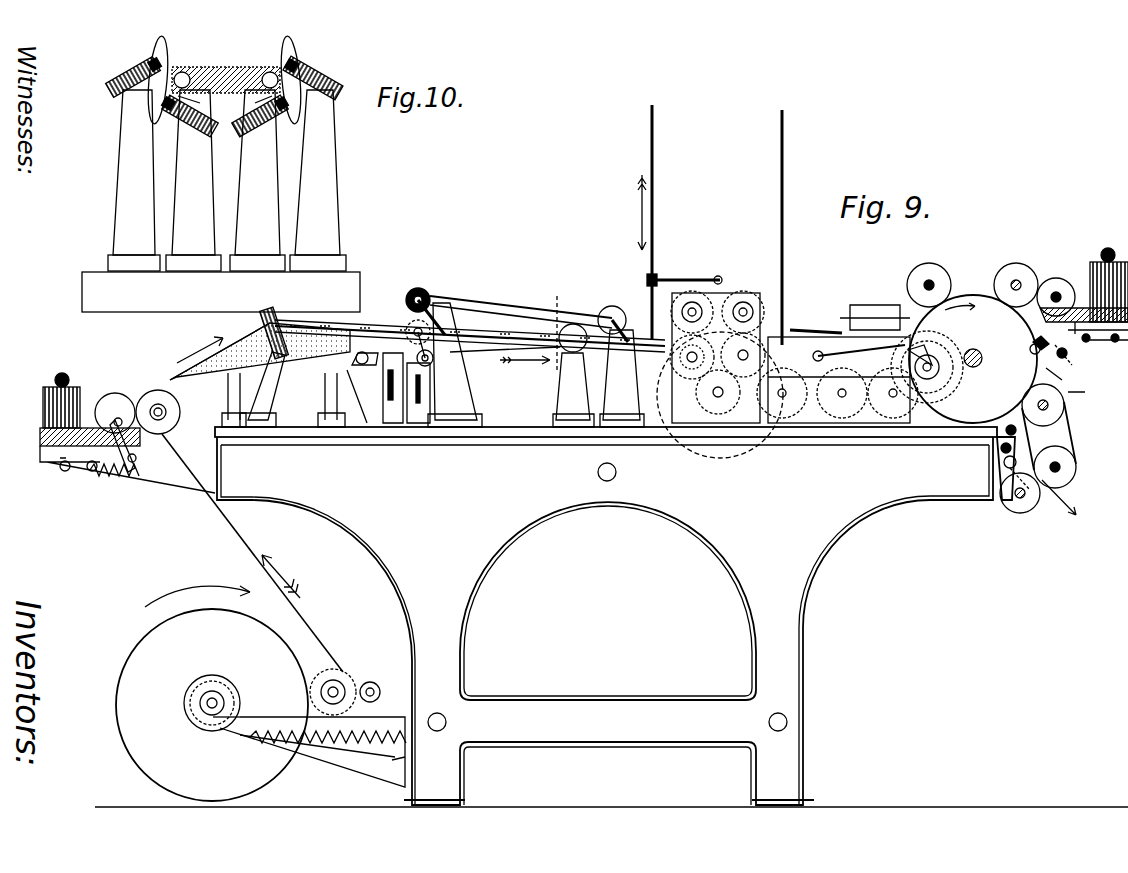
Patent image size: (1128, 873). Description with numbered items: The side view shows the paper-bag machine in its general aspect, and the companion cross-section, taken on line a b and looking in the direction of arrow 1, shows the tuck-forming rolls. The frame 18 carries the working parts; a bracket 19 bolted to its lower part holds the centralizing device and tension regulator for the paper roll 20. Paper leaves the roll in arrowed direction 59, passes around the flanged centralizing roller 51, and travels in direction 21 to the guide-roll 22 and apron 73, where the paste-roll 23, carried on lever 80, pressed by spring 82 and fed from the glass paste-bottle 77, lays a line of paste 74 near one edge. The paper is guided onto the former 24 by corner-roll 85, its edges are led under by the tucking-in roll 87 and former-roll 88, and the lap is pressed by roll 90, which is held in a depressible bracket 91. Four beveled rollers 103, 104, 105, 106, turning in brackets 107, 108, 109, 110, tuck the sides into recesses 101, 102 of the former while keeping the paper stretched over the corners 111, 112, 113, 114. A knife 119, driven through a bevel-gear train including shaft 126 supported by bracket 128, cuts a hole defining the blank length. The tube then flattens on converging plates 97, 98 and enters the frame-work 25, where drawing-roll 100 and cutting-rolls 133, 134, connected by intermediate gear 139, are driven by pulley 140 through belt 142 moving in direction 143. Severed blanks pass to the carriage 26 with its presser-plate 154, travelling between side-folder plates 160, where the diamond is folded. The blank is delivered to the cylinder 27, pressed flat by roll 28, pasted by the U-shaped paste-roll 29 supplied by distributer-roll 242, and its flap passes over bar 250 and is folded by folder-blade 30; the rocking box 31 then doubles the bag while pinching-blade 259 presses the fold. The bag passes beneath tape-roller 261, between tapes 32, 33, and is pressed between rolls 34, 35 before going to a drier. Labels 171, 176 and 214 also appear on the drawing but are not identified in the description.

In FIG. 9, the frame 18 is at (606, 616).
In FIG. 9, the bracket 19 is at (309, 752).
In FIG. 9, the paper roll 20 is at (212, 705).
In FIG. 9, the direction of paper travel 21 is at (252, 553).
In FIG. 9, the guide-roll 22 is at (158, 412).
In FIG. 9, the paste-roll 23 is at (115, 413).
In FIG. 10, the former 24 is at (226, 71).
In FIG. 9, the former 24 is at (470, 373).
In FIG. 9, the frame-work 25 is at (716, 358).
In FIG. 9, the carriage 26 is at (837, 380).
In FIG. 9, the cylinder 27 is at (973, 359).
In FIG. 9, the roll 28 is at (929, 285).
In FIG. 9, the paste-roll 29 is at (1016, 285).
In FIG. 9, the folder-blade 30 is at (1088, 340).
In FIG. 9, the rocking box 31 is at (1077, 384).
In FIG. 9, the tape 32 is at (1049, 436).
In FIG. 9, the tape 33 is at (1013, 462).
In FIG. 9, the pressing roll 34 is at (1055, 467).
In FIG. 9, the pressing roll 35 is at (1038, 494).
In FIG. 9, the centralizing roller 51 is at (345, 692).
In FIG. 9, the arrowed direction 59 is at (197, 590).
In FIG. 9, the apron 73 is at (207, 353).
In FIG. 9, the line of paste 74 is at (260, 375).
In FIG. 9, the paste-bottle 77 is at (71, 400).
In FIG. 9, the lever 80 is at (100, 446).
In FIG. 9, the spring 82 is at (127, 469).
In FIG. 9, the corner-roll 85 is at (270, 363).
In FIG. 9, the tucking-in roll 87 is at (359, 387).
In FIG. 9, the former-roll 88 is at (412, 334).
In FIG. 9, the roll 90 is at (435, 349).
In FIG. 9, the bracket 91 is at (406, 388).
In FIG. 9, the converging plate 97 is at (490, 346).
In FIG. 9, the converging plate 98 is at (521, 305).
In FIG. 9, the drawing-roll 100 is at (692, 312).
In FIG. 10, the recess of the former 101 is at (267, 69).
In FIG. 9, the recess of the former 101 is at (470, 334).
In FIG. 10, the recess of the former 102 is at (184, 72).
In FIG. 10, the beveled roller 103 is at (265, 116).
In FIG. 9, the beveled roller 103 is at (574, 338).
In FIG. 10, the beveled roller 104 is at (184, 116).
In FIG. 10, the beveled roller 105 is at (313, 68).
In FIG. 9, the beveled roller 105 is at (613, 324).
In FIG. 10, the beveled roller 106 is at (148, 56).
In FIG. 10, the bracket 107 is at (257, 180).
In FIG. 9, the bracket 107 is at (573, 390).
In FIG. 10, the bracket 108 is at (193, 180).
In FIG. 10, the bracket 109 is at (318, 180).
In FIG. 9, the bracket 109 is at (621, 378).
In FIG. 10, the bracket 110 is at (134, 180).
In FIG. 10, the corner of the former 111 is at (254, 104).
In FIG. 10, the corner of the former 112 is at (293, 60).
In FIG. 10, the corner of the former 113 is at (200, 104).
In FIG. 10, the corner of the former 114 is at (173, 67).
In FIG. 9, the notch-knife 119 is at (434, 304).
In FIG. 9, the shaft 126 is at (521, 315).
In FIG. 9, the bracket 128 is at (455, 365).
In FIG. 9, the cutting-roll 133 is at (717, 356).
In FIG. 9, the cutting-roll 134 is at (743, 312).
In FIG. 9, the intermediate gear 139 is at (718, 392).
In FIG. 9, the driving-pulley 140 is at (720, 402).
In FIG. 9, the belt 142 is at (714, 225).
In FIG. 9, the direction of belt motion 143 is at (626, 212).
In FIG. 9, the presser-plate 154 is at (816, 322).
In FIG. 9, the side-folder plate 160 is at (875, 316).
In FIG. 9, the link 171 is at (859, 352).
In FIG. 9, the pulley 176 is at (927, 367).
In FIG. 9, the cylinder shaft 214 is at (988, 358).
In FIG. 9, the distributer-roll 242 is at (1056, 297).
In FIG. 9, the bar 250 is at (1027, 345).
In FIG. 9, the pinching-blade 259 is at (1083, 360).
In FIG. 9, the tape-roller 261 is at (1043, 405).
In FIG. 9, the arrow 1 is at (525, 367).
In FIG. 9, the section line a is at (554, 326).
In FIG. 9, the section line b is at (554, 379).